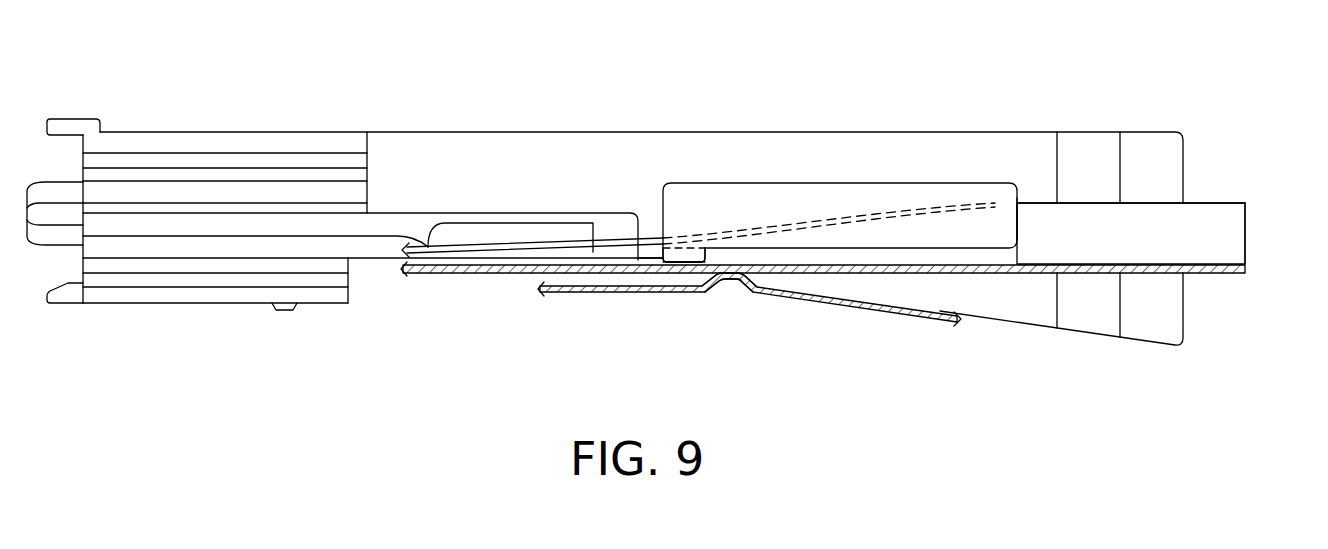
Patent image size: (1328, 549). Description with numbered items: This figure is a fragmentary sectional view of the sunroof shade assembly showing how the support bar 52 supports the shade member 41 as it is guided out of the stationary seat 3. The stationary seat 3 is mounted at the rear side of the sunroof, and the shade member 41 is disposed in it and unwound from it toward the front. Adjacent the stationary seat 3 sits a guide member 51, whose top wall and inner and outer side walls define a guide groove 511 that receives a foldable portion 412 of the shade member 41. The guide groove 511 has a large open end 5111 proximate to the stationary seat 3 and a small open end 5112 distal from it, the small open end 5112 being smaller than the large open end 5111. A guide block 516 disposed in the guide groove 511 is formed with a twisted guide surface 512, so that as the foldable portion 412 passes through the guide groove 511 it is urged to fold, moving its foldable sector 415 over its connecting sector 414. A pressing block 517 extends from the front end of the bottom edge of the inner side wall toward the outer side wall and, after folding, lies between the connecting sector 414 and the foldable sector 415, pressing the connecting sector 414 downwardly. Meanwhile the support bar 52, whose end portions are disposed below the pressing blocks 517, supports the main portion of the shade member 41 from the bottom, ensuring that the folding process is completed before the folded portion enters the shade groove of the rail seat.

The stationary seat 3 is at (908, 312).
The shade member 41 is at (1250, 177).
The foldable portion 412 is at (1247, 235).
The connecting sector 414 is at (1107, 270).
The foldable sector 415 is at (1123, 238).
The guide member 51 is at (857, 117).
The guide groove 511 is at (975, 232).
The large open end 5111 is at (1022, 203).
The small open end 5112 is at (662, 250).
The guide surface 512 is at (793, 212).
The guide block 516 is at (752, 208).
The pressing block 517 is at (687, 262).
The support bar 52 is at (733, 278).